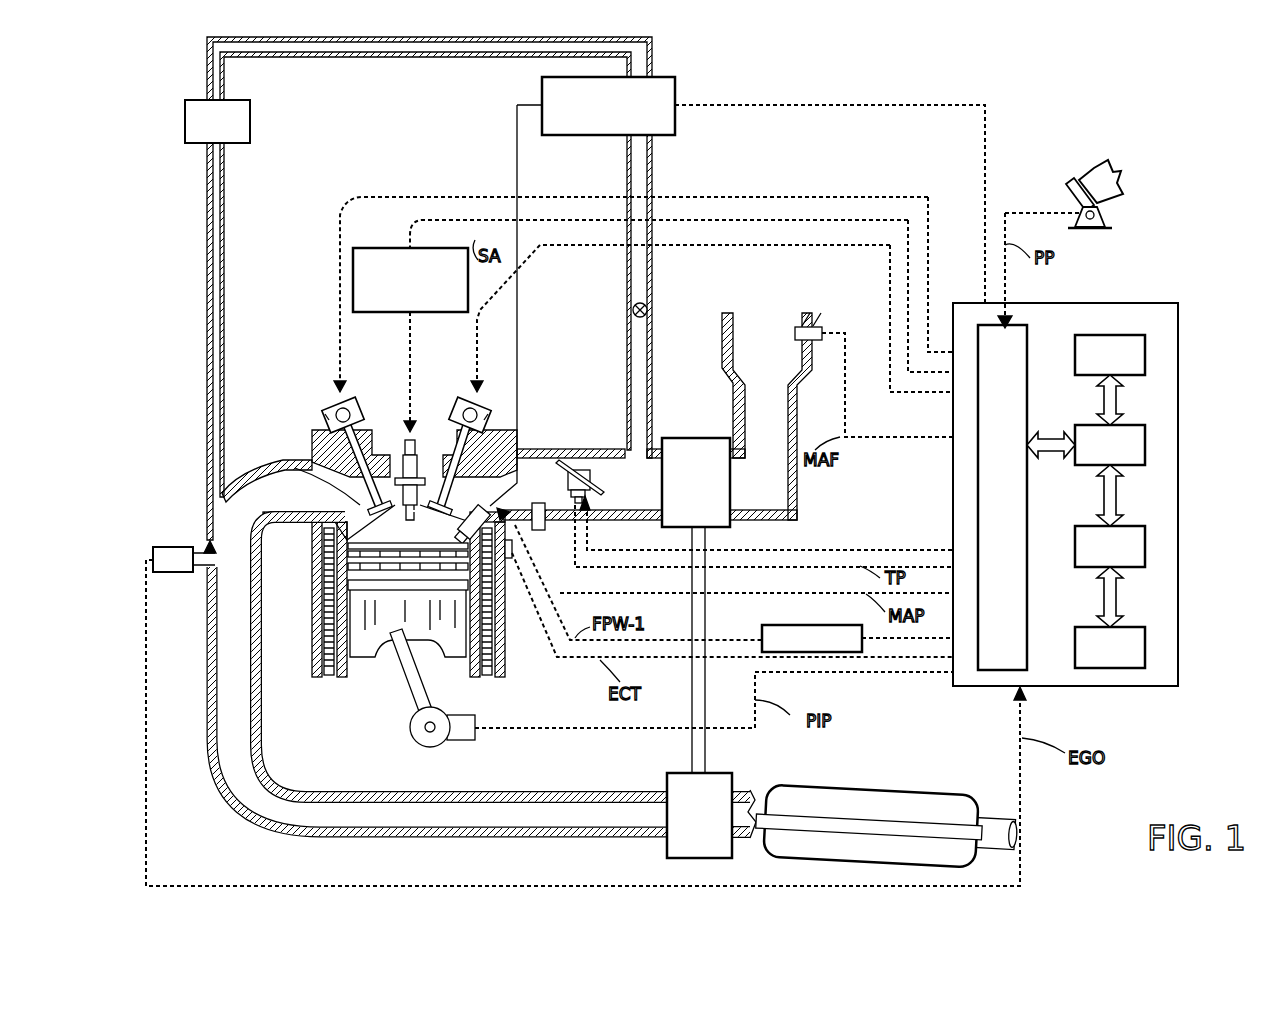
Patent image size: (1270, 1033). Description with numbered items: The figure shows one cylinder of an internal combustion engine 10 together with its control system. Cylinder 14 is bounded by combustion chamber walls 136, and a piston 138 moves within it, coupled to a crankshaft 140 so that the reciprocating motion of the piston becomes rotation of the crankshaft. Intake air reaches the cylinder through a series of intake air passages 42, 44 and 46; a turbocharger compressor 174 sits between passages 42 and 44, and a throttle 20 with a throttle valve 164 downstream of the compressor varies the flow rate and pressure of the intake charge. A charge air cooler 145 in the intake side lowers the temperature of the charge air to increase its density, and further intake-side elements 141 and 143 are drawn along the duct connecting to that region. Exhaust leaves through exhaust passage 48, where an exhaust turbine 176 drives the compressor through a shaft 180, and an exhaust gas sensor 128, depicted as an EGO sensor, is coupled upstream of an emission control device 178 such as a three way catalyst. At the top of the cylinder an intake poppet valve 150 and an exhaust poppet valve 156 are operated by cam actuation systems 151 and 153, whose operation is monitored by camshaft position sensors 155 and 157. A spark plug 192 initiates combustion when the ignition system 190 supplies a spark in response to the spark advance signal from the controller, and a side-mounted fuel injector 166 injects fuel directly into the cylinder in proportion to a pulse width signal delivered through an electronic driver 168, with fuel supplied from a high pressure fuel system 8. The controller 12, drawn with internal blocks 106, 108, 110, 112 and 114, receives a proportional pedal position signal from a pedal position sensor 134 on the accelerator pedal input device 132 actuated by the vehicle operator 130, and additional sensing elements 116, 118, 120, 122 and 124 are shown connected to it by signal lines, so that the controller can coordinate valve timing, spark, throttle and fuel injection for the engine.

The internal combustion engine 10 is at (145, 138).
The high pressure fuel system 8 is at (608, 106).
The controller 12 is at (1180, 303).
The cylinder 14 is at (312, 548).
The throttle 20 is at (580, 470).
The intake air passage 42 is at (767, 416).
The intake air passage 44 is at (706, 484).
The intake air passage 46 is at (582, 484).
The exhaust passage 48 is at (291, 482).
The CPU 106 is at (1145, 440).
The I/O ports 108 is at (1030, 335).
The ROM 110 is at (1145, 347).
The RAM 112 is at (1145, 538).
The KAM 114 is at (1145, 640).
The engine coolant temperature sensor 116 is at (512, 560).
The Hall effect sensor 118 is at (490, 640).
The crankshaft sensor 120 is at (462, 742).
The mass air flow sensor 122 is at (820, 325).
The manifold pressure sensor 124 is at (540, 530).
The exhaust gas sensor 128 is at (153, 551).
The vehicle operator 130 is at (1125, 178).
The input device 132 is at (1078, 196).
The pedal position sensor 134 is at (1108, 222).
The combustion chamber walls 136 is at (320, 678).
The piston 138 is at (390, 640).
The crankshaft 140 is at (420, 745).
The fuel vapor / purge duct 141 is at (655, 168).
The purge valve 143 is at (647, 304).
The charge air cooler 145 is at (250, 113).
The intake poppet valve 150 is at (445, 503).
The cam actuation system 151 is at (460, 393).
The cam actuation system 153 is at (348, 402).
The camshaft position sensor 155 is at (487, 415).
The exhaust poppet valve 156 is at (330, 468).
The camshaft position sensor 157 is at (323, 412).
The throttle valve 164 is at (562, 473).
The fuel injector 166 is at (480, 509).
The electronic driver 168 is at (762, 628).
The compressor 174 is at (680, 437).
The exhaust turbine 176 is at (667, 852).
The emission control device 178 is at (940, 790).
The shaft 180 is at (700, 748).
The ignition system 190 is at (384, 246).
The spark plug 192 is at (405, 463).